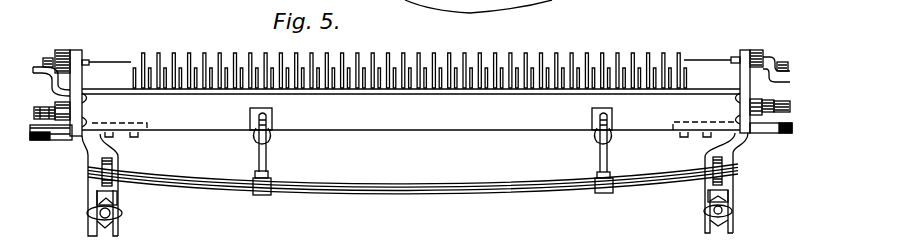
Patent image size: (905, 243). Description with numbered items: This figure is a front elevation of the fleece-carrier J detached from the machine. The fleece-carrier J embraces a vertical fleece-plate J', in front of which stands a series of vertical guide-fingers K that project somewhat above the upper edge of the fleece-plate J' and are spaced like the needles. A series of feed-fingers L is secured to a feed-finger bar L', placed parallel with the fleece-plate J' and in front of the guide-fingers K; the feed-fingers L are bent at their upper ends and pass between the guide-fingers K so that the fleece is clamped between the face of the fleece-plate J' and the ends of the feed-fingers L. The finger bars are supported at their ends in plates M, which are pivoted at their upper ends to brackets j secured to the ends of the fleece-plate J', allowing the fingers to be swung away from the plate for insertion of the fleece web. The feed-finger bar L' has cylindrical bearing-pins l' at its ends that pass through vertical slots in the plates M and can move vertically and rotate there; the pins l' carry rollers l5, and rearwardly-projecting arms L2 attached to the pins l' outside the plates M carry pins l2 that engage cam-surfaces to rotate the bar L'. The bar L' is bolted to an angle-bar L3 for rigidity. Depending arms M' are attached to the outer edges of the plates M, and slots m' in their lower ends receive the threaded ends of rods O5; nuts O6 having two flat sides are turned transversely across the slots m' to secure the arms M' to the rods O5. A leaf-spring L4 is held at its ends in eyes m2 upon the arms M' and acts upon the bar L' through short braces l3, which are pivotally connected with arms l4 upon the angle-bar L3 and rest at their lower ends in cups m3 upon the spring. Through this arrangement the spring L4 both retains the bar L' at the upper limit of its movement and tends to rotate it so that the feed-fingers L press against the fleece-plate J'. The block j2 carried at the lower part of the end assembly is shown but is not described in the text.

The fleece-carrier J is at (410, 82).
The fleece-plate J' is at (410, 56).
The bracket j is at (62, 50).
The lower bearing block j2 is at (38, 141).
The guide-fingers K is at (553, 50).
The feed-fingers L is at (411, 107).
The feed-finger bar L' is at (411, 82).
The rearwardly-projecting arm L2 is at (40, 78).
The angle-bar L3 is at (411, 122).
The leaf-spring L4 is at (432, 188).
The bearing-pin l' is at (397, 104).
The pin l2 is at (43, 61).
The brace l3 is at (258, 137).
The arm l4 is at (272, 120).
The roller l5 is at (30, 130).
The plate M is at (394, 107).
The depending arm M' is at (396, 184).
The slot m' is at (390, 197).
The eye m2 is at (113, 165).
The cup m3 is at (270, 176).
The rod O5 is at (117, 200).
The nut O6 is at (118, 208).